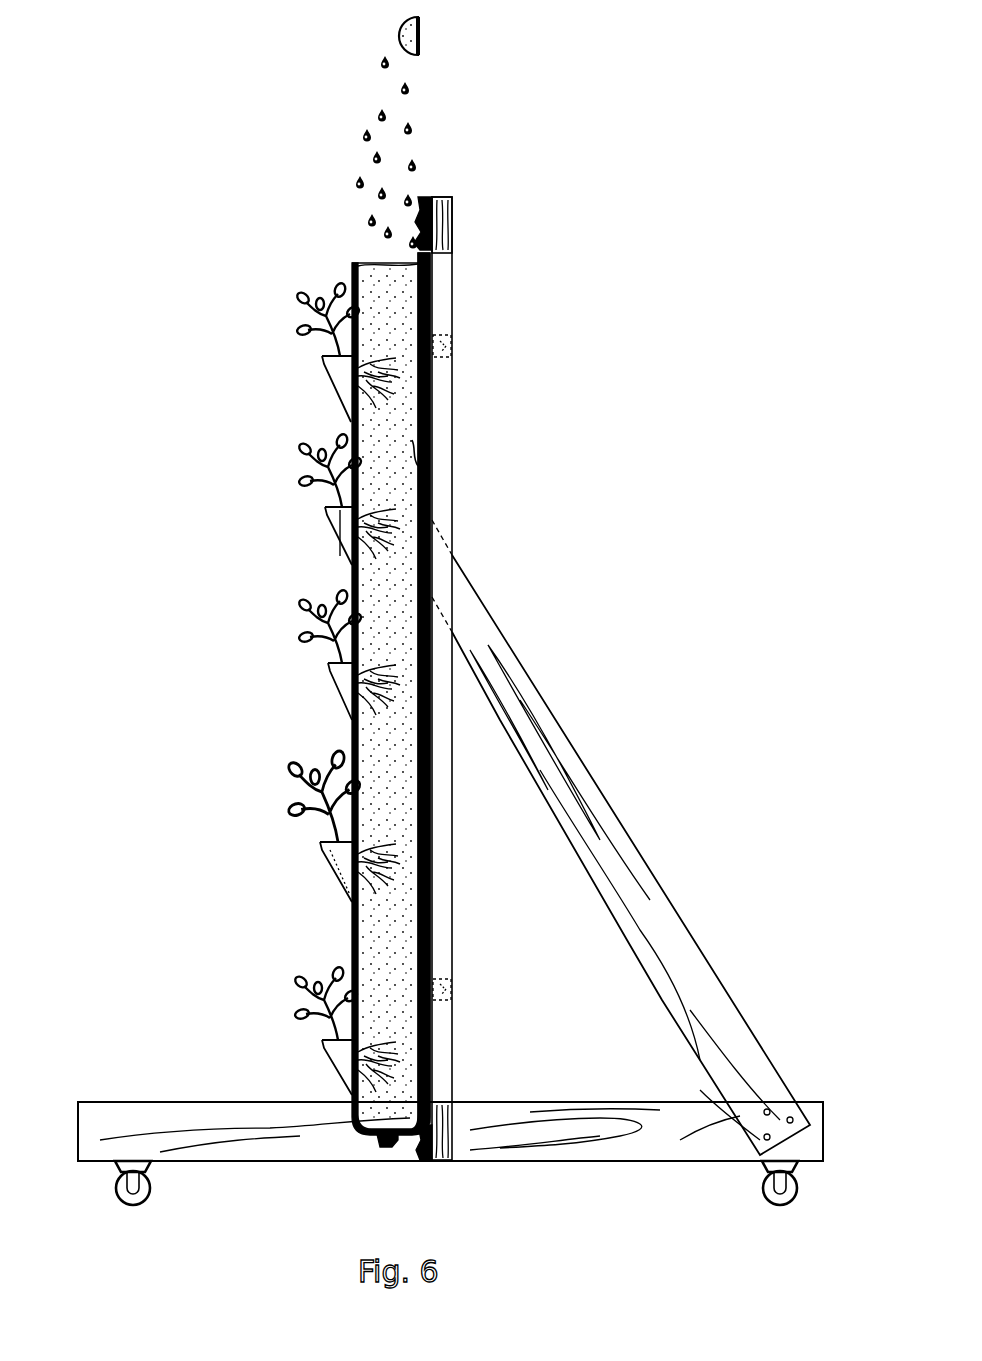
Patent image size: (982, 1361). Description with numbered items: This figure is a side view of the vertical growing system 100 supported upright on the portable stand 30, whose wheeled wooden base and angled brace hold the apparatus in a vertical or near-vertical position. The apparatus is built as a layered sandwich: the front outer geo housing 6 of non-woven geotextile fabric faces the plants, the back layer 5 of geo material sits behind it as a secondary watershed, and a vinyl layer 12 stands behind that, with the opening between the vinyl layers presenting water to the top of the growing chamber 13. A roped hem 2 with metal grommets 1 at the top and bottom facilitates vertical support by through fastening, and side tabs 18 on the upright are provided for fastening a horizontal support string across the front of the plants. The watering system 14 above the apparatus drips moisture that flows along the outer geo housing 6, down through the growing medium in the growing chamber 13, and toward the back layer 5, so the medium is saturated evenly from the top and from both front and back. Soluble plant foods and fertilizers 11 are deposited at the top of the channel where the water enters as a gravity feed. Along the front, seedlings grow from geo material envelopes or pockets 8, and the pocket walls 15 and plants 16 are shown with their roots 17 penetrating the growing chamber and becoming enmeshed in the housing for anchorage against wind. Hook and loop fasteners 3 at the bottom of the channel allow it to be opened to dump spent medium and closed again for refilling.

The vertical growing system 100 is at (170, 417).
The portable stand 30 is at (647, 742).
The vinyl layer 12 is at (428, 300).
The roped hem 2 is at (424, 197).
The side tabs 18 is at (452, 345).
The metal grommets 1 is at (414, 220).
The back layer of geo housing 5 is at (430, 464).
The outer geo housing 6 is at (353, 587).
The hook and loop fasteners 3 is at (377, 1149).
The growing chamber 13 is at (367, 259).
The watering system 14 is at (420, 42).
The geo material envelope 8 is at (331, 523).
The pocket wall 15 is at (350, 893).
The plant foods and fertilizers 11 is at (430, 492).
The plants 16 is at (286, 762).
The roots 17 is at (412, 886).